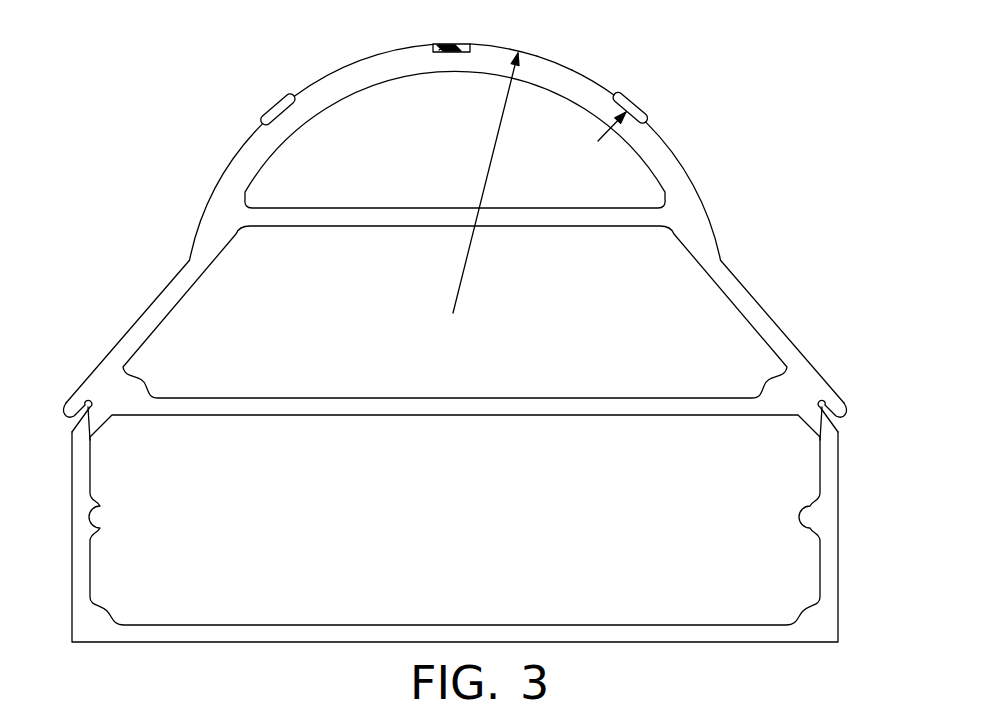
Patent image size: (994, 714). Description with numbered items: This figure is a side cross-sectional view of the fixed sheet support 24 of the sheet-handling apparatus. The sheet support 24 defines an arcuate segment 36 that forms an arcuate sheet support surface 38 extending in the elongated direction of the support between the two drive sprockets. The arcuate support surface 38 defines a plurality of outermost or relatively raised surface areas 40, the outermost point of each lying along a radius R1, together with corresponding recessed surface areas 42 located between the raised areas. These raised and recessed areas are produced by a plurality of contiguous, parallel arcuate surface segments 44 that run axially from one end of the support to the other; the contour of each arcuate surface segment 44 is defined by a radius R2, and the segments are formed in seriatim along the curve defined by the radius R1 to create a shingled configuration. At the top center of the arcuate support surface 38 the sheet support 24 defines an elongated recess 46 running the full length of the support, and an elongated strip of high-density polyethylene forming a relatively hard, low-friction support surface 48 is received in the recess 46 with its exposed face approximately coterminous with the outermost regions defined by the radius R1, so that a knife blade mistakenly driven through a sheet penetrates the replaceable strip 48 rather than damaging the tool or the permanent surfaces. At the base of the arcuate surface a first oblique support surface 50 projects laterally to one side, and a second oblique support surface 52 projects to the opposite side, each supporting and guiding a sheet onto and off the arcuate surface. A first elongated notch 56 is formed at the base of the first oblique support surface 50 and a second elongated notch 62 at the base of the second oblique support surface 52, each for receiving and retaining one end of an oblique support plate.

The sheet support 24 is at (618, 62).
The arcuate segment 36 is at (387, 65).
The arcuate sheet support surface 38 is at (387, 50).
The raised surface areas 40 is at (302, 97).
The recessed surface areas 42 is at (538, 57).
The arcuate surface segments 44 is at (289, 110).
The elongated recess 46 is at (458, 52).
The support surface (polymeric strip) 48 is at (457, 43).
The first oblique support surface 50 is at (790, 343).
The second oblique support surface 52 is at (143, 312).
The first elongated notch 56 is at (822, 430).
The second elongated notch 62 is at (82, 412).
The radius R1 is at (490, 157).
The radius R2 is at (598, 141).